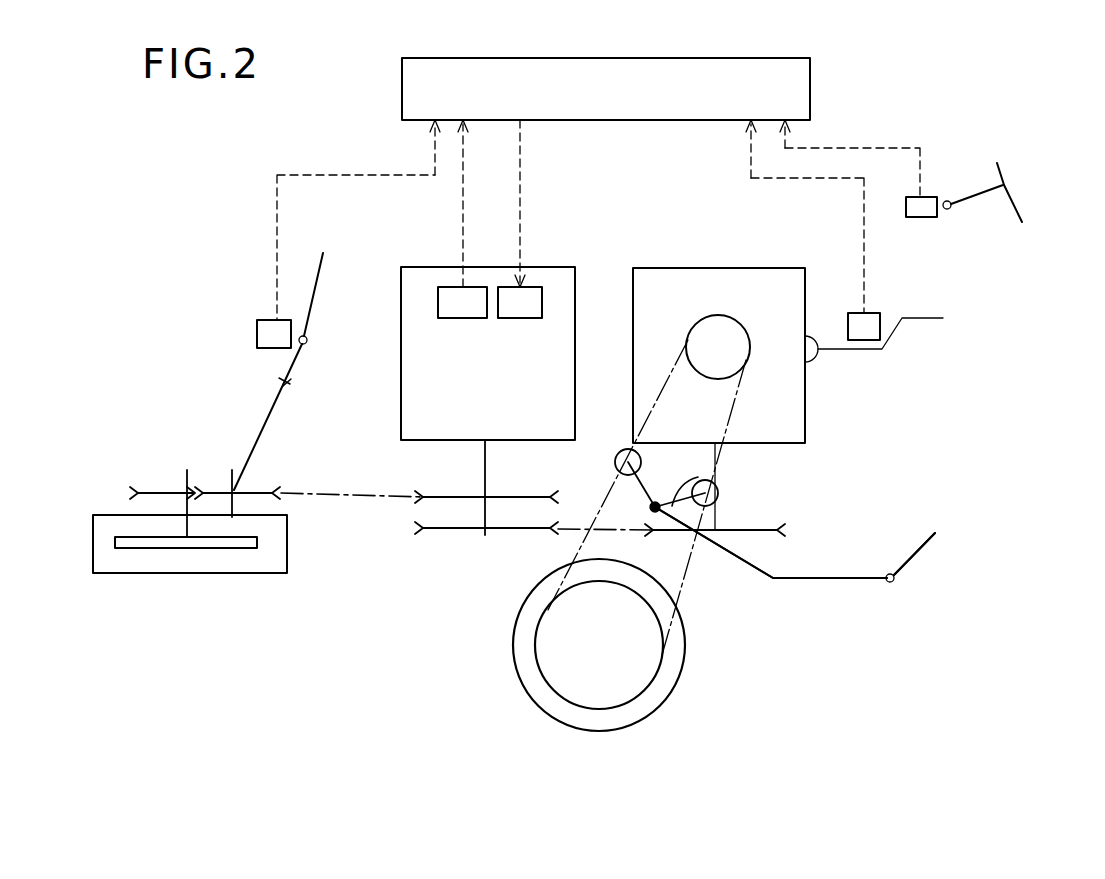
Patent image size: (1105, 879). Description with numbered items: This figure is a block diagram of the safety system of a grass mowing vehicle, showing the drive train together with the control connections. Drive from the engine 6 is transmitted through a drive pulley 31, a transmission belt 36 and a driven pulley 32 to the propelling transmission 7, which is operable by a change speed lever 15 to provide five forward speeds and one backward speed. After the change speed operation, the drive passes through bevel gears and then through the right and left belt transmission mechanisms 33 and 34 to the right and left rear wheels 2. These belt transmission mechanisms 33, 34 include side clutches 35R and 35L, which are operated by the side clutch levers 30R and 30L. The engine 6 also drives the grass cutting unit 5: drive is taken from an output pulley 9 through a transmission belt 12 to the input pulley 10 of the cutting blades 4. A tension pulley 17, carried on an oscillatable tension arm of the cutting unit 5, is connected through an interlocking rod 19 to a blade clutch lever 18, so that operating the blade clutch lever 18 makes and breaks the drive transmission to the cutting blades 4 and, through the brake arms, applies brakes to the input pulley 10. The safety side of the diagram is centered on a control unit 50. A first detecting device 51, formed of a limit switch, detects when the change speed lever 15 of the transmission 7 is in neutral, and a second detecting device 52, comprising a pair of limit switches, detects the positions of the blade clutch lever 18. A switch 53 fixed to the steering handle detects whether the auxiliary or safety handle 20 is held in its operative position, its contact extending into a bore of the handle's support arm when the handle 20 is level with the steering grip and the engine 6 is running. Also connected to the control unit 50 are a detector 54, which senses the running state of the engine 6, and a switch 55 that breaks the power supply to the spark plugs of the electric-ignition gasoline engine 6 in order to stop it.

The rear wheels 2 is at (670, 693).
The cutting blades 4 is at (153, 543).
The grass cutting unit 5 is at (93, 543).
The engine 6 is at (430, 267).
The propelling transmission 7 is at (655, 268).
The output pulley 9 is at (440, 497).
The input pulley 10 is at (155, 493).
The transmission belt 12 is at (342, 498).
The change speed lever 15 is at (925, 318).
The tension pulley 17 is at (257, 493).
The blade clutch lever 18 is at (318, 290).
The interlocking rod 19 is at (280, 400).
The auxiliary handle 20 is at (1008, 202).
The left side clutch lever 30L is at (917, 557).
The right side clutch lever 30R is at (795, 542).
The drive pulley 31 is at (462, 530).
The driven pulley 32 is at (765, 528).
The right belt transmission mechanism 33 is at (743, 322).
The left belt transmission mechanism 34 is at (660, 658).
The left side clutch 35L is at (635, 478).
The right side clutch 35R is at (700, 480).
The transmission belt 36 is at (563, 535).
The control unit 50 is at (826, 87).
The first detecting device 51 is at (876, 313).
The second detecting device 52 is at (257, 332).
The switch 53 is at (930, 217).
The detector 54 is at (452, 310).
The switch 55 is at (528, 310).